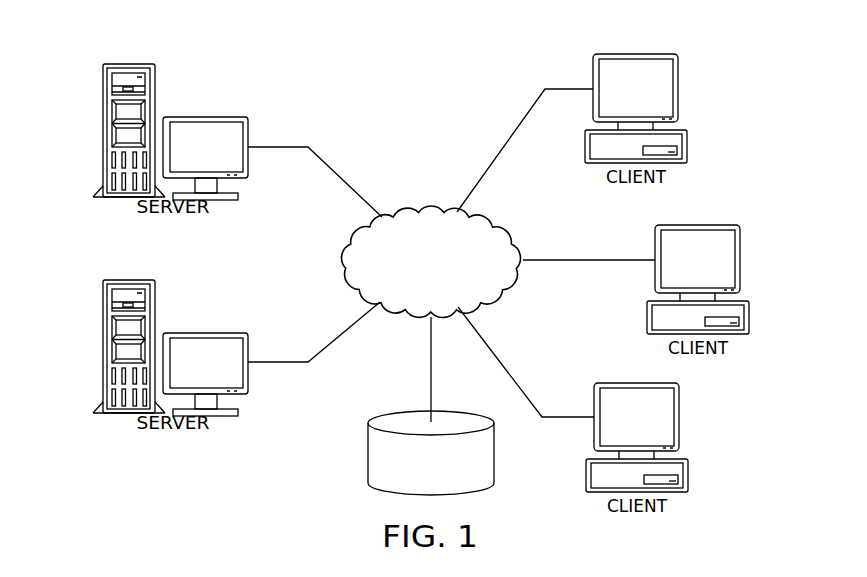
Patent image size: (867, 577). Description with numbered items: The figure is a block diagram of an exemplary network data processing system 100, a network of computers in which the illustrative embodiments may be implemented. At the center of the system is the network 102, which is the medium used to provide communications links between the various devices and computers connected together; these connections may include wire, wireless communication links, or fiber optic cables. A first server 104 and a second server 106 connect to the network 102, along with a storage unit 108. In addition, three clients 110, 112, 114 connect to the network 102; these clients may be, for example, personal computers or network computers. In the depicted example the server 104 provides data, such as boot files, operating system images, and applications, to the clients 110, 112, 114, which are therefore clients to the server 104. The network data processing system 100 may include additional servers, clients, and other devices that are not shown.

The network data processing system 100 is at (310, 62).
The network 102 is at (425, 206).
The server 104 is at (102, 132).
The server 106 is at (102, 347).
The storage unit 108 is at (368, 455).
The client 110 is at (688, 147).
The client 112 is at (748, 318).
The client 114 is at (687, 477).